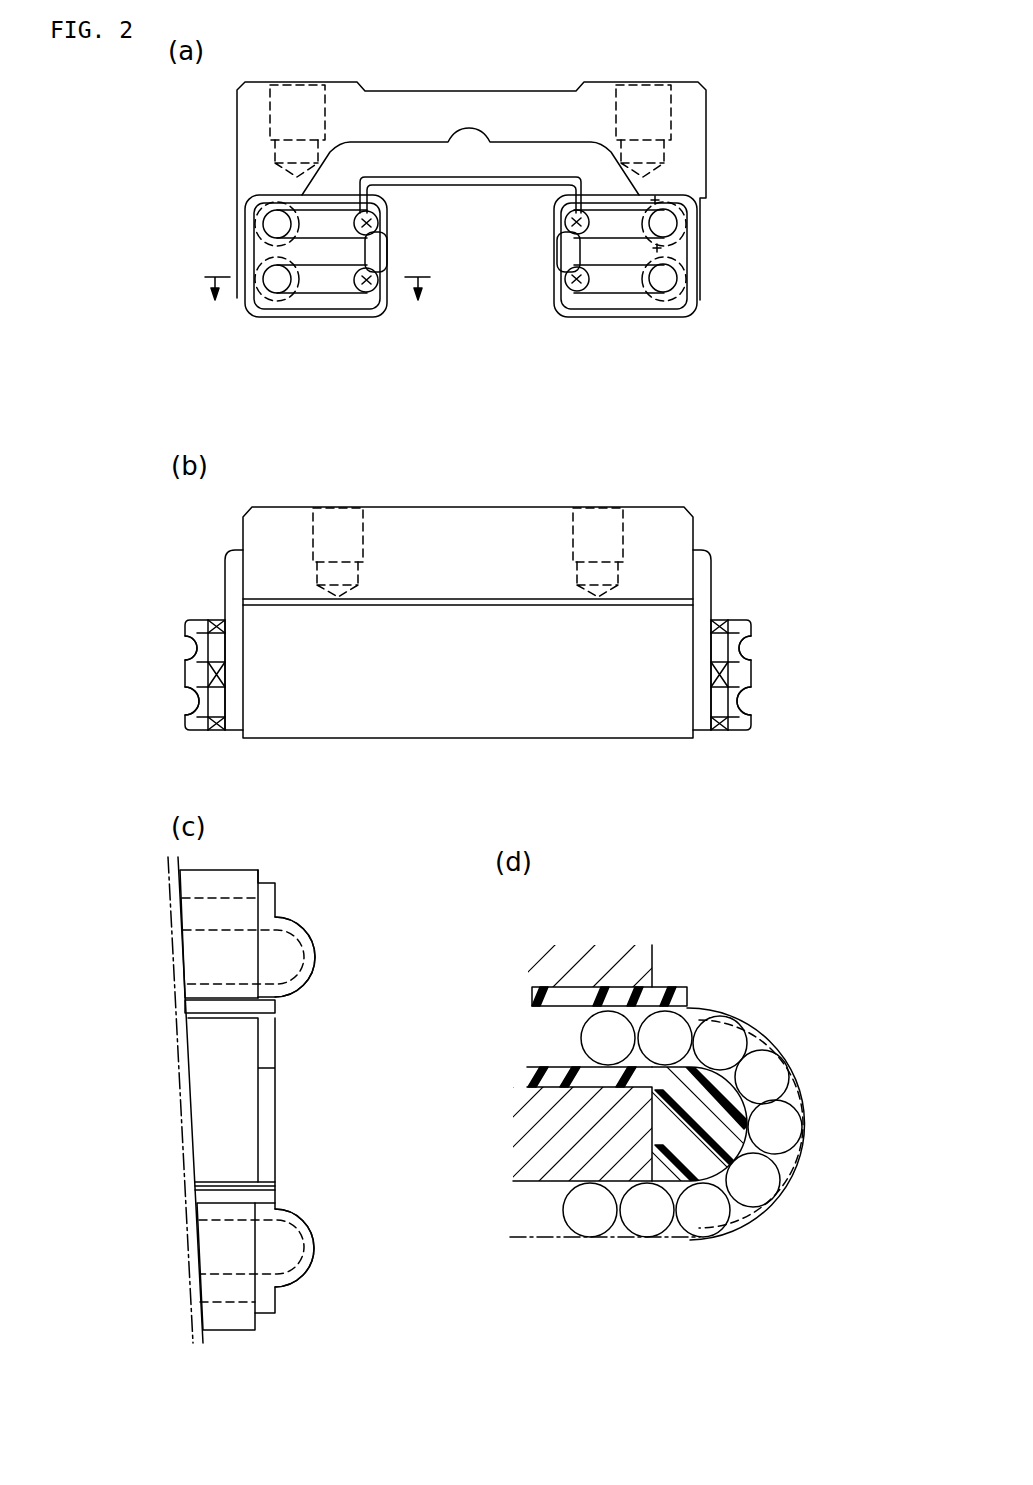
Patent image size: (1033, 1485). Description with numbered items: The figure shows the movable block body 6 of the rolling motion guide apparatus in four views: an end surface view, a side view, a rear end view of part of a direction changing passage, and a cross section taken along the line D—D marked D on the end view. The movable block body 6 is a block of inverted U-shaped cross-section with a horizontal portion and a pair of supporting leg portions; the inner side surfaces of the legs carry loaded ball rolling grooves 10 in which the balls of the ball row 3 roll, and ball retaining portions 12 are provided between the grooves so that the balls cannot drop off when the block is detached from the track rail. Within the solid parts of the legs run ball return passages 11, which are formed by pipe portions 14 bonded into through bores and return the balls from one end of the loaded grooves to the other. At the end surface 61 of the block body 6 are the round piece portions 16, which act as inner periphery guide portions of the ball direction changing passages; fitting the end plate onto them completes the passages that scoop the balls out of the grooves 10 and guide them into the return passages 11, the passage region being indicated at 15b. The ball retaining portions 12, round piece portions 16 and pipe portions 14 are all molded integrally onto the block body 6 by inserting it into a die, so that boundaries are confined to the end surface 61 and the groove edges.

The movable block body 6 is at (515, 86).
The end surface 61 is at (410, 110).
The round piece portion 16 is at (327, 193).
The ball return groove 15b is at (330, 220).
The ball return passage 11 is at (268, 229).
The loaded ball rolling groove 10 is at (360, 216).
The ball row 3 is at (372, 224).
The ball retaining portion 12 is at (378, 252).
The pipe portion 14 is at (633, 997).
The line D— D is at (317, 290).